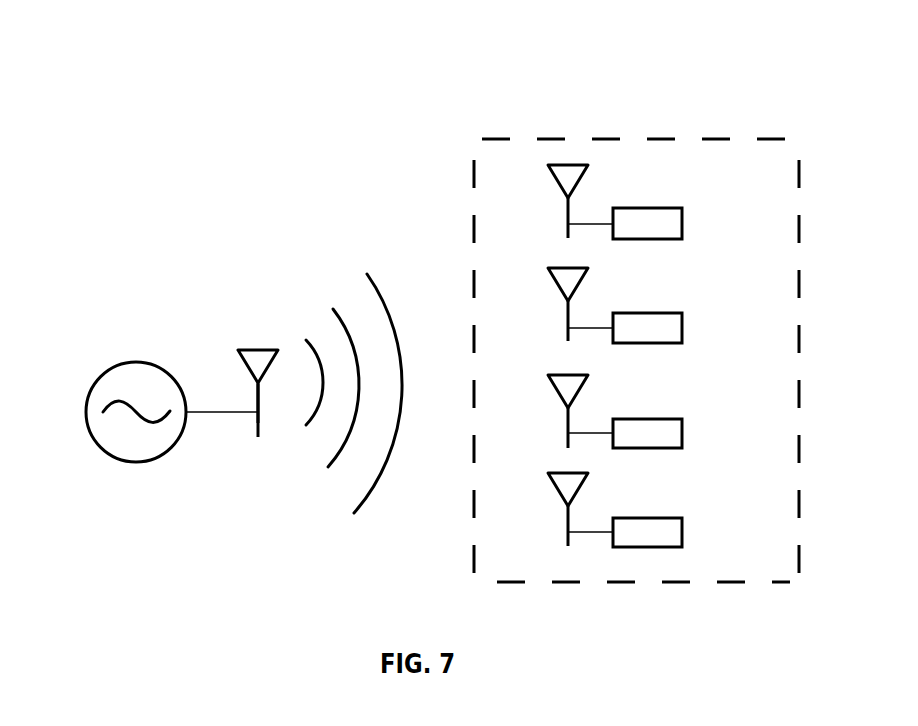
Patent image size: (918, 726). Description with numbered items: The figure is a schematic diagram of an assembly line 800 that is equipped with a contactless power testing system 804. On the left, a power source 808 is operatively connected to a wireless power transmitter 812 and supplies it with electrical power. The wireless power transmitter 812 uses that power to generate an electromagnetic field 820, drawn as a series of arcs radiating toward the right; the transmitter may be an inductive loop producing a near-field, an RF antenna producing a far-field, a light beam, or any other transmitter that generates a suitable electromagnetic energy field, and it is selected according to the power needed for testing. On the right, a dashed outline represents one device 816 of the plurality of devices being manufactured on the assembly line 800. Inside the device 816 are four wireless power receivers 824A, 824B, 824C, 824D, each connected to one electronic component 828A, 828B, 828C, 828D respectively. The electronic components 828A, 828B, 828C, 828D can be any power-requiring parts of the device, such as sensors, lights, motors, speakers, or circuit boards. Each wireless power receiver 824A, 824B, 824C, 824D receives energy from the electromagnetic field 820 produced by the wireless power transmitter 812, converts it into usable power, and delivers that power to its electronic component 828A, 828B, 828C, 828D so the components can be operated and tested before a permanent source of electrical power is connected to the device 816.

The assembly line 800 is at (697, 100).
The contactless power testing system 804 is at (368, 200).
The power source 808 is at (118, 365).
The wireless power transmitter 812 is at (258, 348).
The device 816 is at (498, 138).
The electromagnetic field 820 is at (312, 478).
The wireless power receiver 824A is at (556, 182).
The wireless power receiver 824B is at (556, 288).
The wireless power receiver 824C is at (556, 393).
The wireless power receiver 824D is at (556, 491).
The electronic component 828A is at (681, 211).
The electronic component 828B is at (681, 316).
The electronic component 828C is at (681, 420).
The electronic component 828D is at (681, 518).